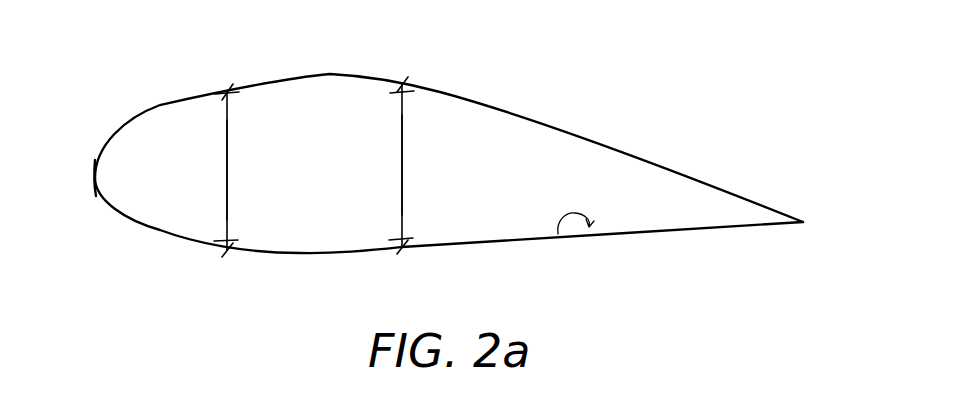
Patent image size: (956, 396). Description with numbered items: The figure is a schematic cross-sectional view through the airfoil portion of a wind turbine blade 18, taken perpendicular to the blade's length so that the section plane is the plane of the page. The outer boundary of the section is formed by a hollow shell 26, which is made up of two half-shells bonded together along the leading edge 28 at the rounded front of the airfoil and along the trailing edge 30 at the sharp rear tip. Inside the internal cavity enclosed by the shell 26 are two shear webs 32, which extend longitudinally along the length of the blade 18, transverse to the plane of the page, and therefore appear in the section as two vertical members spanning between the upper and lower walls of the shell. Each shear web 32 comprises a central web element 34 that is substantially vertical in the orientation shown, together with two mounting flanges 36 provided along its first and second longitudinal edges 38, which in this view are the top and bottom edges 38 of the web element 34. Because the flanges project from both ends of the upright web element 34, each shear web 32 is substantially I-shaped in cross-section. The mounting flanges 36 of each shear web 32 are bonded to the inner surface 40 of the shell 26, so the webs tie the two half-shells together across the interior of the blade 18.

The wind turbine blade 18 is at (451, 160).
The hollow shell 26 is at (145, 111).
The leading edge 28 is at (93, 180).
The trailing edge 30 is at (806, 224).
The shear web 32 is at (230, 180).
The central web element 34 is at (225, 150).
The mounting flange 36 is at (228, 90).
The longitudinal edge 38 is at (231, 97).
The inner surface 40 is at (558, 235).